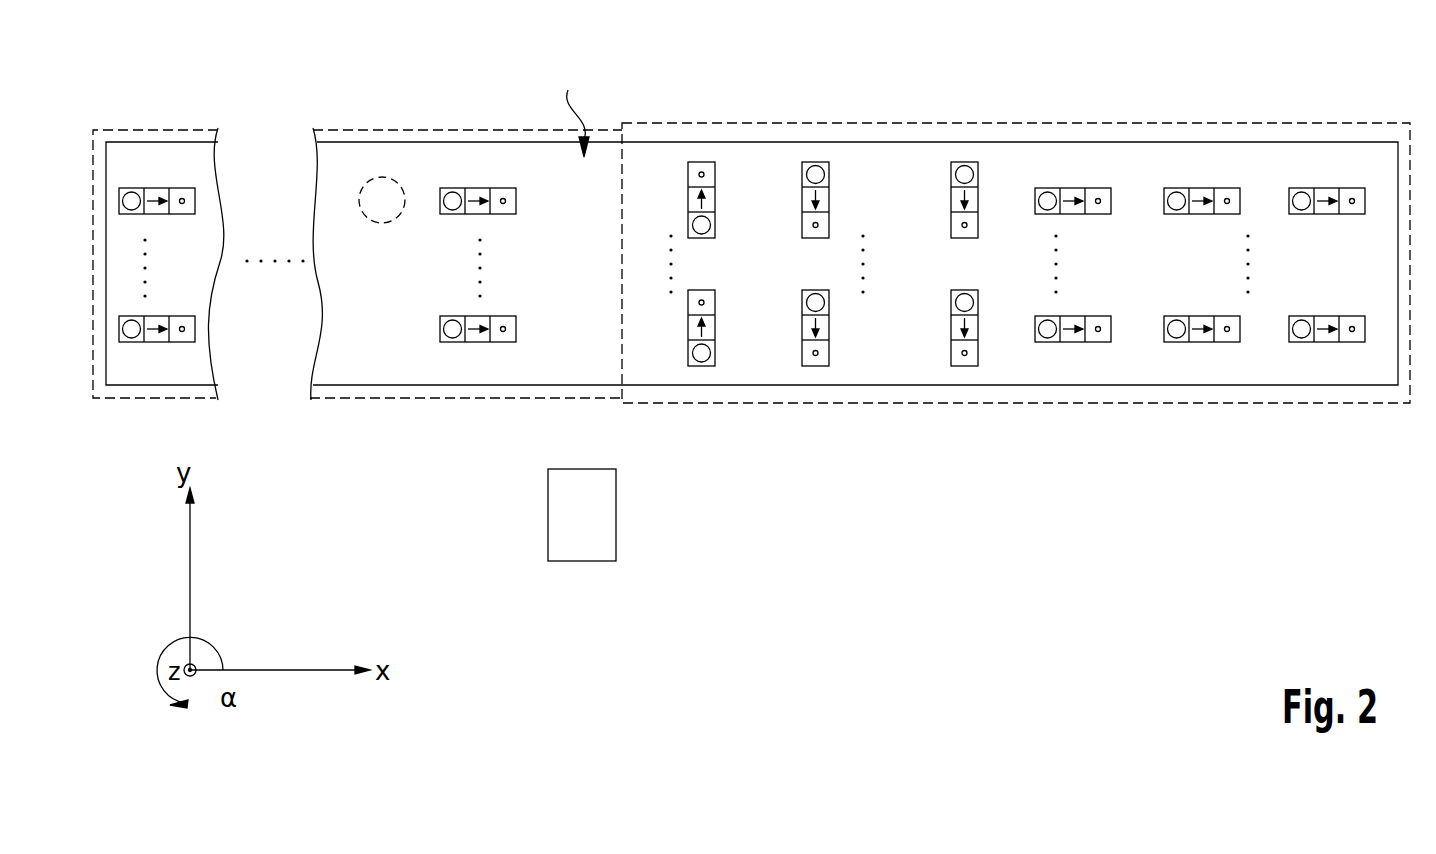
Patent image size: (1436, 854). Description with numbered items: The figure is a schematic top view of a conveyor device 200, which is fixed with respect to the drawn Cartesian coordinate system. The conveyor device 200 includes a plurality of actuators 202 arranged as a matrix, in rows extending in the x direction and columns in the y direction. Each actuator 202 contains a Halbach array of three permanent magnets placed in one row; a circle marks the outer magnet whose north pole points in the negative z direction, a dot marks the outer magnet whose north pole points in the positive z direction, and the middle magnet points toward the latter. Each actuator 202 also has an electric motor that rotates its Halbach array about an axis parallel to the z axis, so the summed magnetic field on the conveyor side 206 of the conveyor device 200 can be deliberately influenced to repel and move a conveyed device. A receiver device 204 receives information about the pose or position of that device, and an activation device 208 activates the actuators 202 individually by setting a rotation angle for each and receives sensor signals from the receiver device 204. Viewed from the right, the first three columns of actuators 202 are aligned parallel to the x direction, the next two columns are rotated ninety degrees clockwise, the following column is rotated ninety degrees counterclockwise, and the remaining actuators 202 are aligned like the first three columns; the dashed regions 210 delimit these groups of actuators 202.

The conveyor device 200 is at (465, 141).
The actuators 202 is at (180, 188).
The receiver device 204 is at (375, 223).
The conveyor side 206 is at (571, 107).
The activation device 208 is at (616, 516).
The subregion / group of components 210 is at (137, 129).